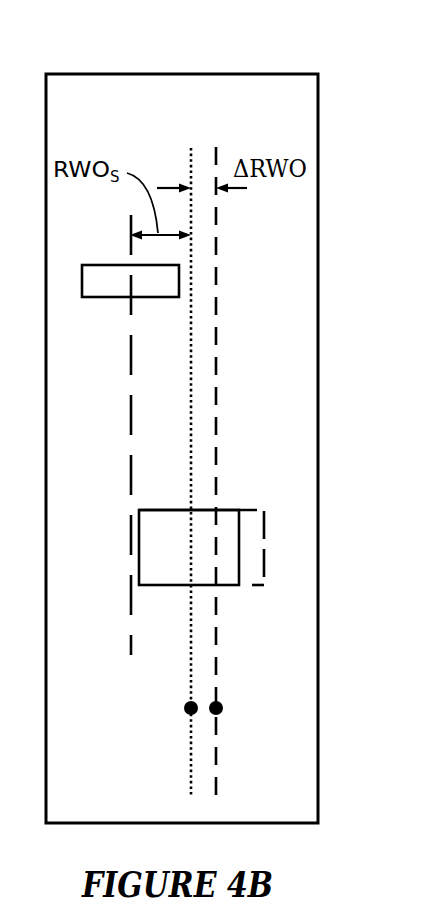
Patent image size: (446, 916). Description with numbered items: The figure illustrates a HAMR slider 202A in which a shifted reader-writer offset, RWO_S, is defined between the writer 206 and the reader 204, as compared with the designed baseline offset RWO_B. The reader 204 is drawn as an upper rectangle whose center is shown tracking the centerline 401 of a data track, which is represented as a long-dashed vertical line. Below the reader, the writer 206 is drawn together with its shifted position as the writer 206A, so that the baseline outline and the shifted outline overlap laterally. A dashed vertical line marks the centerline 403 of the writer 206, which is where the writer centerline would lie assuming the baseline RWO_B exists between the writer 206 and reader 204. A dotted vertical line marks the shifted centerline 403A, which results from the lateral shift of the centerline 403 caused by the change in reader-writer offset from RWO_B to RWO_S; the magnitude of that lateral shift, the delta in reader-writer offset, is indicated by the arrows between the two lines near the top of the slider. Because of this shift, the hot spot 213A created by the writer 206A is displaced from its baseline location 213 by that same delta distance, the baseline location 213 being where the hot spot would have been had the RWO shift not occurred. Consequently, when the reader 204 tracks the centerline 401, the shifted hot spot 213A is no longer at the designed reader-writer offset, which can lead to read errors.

The slider 202A is at (253, 74).
The reader 204 is at (102, 297).
The writer 206 is at (250, 585).
The writer 206A is at (229, 585).
The baseline location 213 is at (223, 708).
The hot spot 213A is at (184, 708).
The centerline 401 is at (130, 648).
The centerline 403 is at (217, 765).
The shifted centerline 403A is at (193, 765).